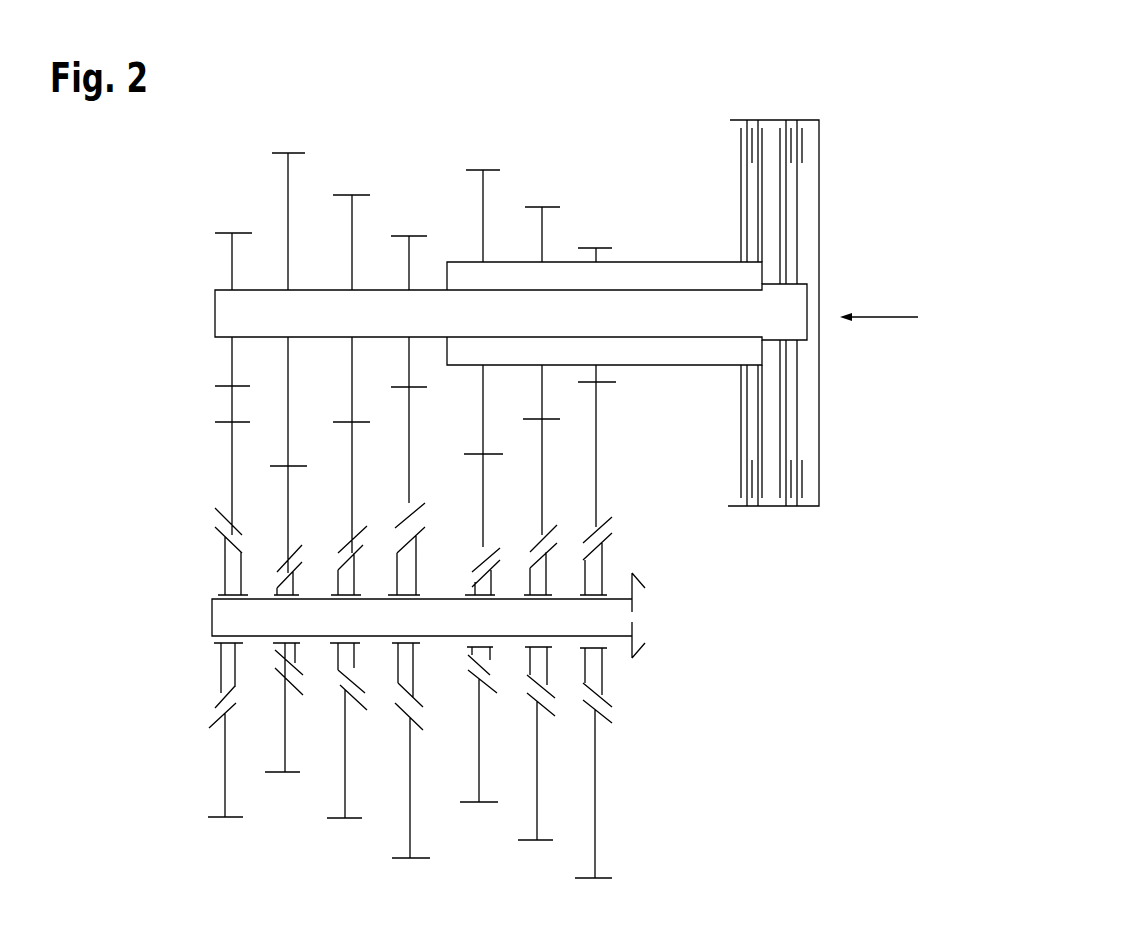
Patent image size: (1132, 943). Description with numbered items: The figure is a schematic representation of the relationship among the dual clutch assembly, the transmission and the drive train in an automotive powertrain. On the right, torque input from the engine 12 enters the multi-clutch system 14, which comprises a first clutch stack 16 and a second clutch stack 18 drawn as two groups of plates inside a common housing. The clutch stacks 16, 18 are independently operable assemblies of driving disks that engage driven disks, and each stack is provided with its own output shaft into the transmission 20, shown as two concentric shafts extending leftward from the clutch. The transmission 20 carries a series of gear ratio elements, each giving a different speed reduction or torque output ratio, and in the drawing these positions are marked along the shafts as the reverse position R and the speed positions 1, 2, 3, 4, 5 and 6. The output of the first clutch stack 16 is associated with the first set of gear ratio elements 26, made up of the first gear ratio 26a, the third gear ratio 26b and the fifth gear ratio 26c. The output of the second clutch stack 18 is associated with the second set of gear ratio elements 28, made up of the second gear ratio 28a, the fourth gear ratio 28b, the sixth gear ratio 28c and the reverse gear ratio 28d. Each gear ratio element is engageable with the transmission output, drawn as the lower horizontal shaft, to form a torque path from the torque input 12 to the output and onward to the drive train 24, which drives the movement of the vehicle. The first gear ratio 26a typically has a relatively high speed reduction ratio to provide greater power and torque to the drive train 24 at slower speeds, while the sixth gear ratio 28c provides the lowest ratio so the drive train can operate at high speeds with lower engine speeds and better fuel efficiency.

The torque input source 12 is at (966, 318).
The multi-clutch system 14 is at (860, 196).
The first clutch stack 16 is at (753, 106).
The second clutch stack 18 is at (790, 106).
The transmission 20 is at (174, 322).
The drive train 24 is at (638, 617).
The first set of gear ratio elements 26 is at (604, 325).
The second set of gear ratio elements 28 is at (331, 104).
The first gear ratio 26a is at (605, 672).
The third gear ratio 26b is at (543, 668).
The fifth gear ratio 26c is at (490, 660).
The second gear ratio 28a is at (415, 667).
The fourth gear ratio 28b is at (357, 658).
The sixth gear ratio 28c is at (293, 652).
The reverse gear ratio 28d is at (238, 668).
The reverse gear R is at (233, 400).
The first speed gear 1 is at (597, 408).
The second speed gear 2 is at (407, 402).
The third speed gear 3 is at (541, 387).
The fourth speed gear 4 is at (350, 381).
The fifth speed gear 5 is at (483, 369).
The sixth speed gear 6 is at (288, 360).